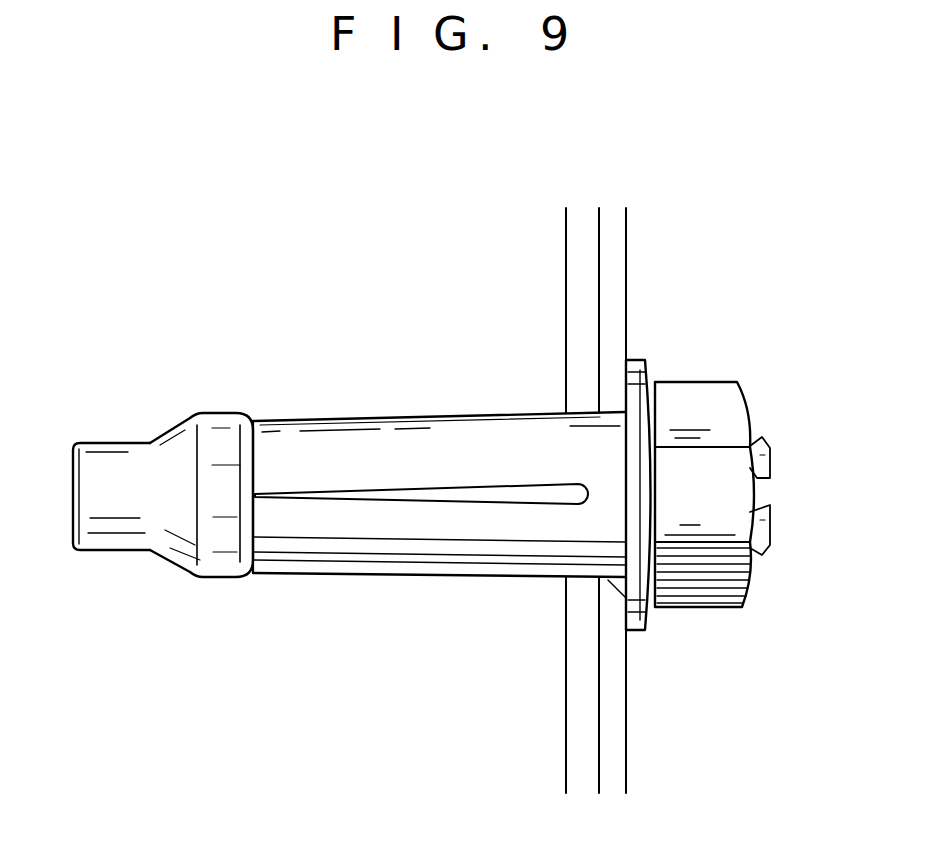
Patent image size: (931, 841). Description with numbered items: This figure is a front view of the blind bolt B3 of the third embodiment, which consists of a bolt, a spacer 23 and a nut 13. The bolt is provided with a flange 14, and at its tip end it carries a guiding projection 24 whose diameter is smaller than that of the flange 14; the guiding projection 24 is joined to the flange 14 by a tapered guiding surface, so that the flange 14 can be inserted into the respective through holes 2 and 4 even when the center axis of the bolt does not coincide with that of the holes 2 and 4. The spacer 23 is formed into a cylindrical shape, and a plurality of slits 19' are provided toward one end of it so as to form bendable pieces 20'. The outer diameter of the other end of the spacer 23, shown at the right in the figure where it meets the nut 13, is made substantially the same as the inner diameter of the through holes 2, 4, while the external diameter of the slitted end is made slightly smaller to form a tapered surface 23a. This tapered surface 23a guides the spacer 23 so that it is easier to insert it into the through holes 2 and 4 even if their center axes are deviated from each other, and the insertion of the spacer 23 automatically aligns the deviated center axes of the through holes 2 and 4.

The blind bolt B3 is at (664, 185).
The through hole 2 is at (580, 583).
The through hole 4 is at (648, 622).
The nut 13 is at (714, 400).
The flange 14 is at (222, 562).
The slits 19' is at (421, 418).
The bendable pieces 20' is at (439, 443).
The spacer 23 is at (393, 406).
The tapered surface 23a is at (305, 580).
The guiding projection 24 is at (138, 535).